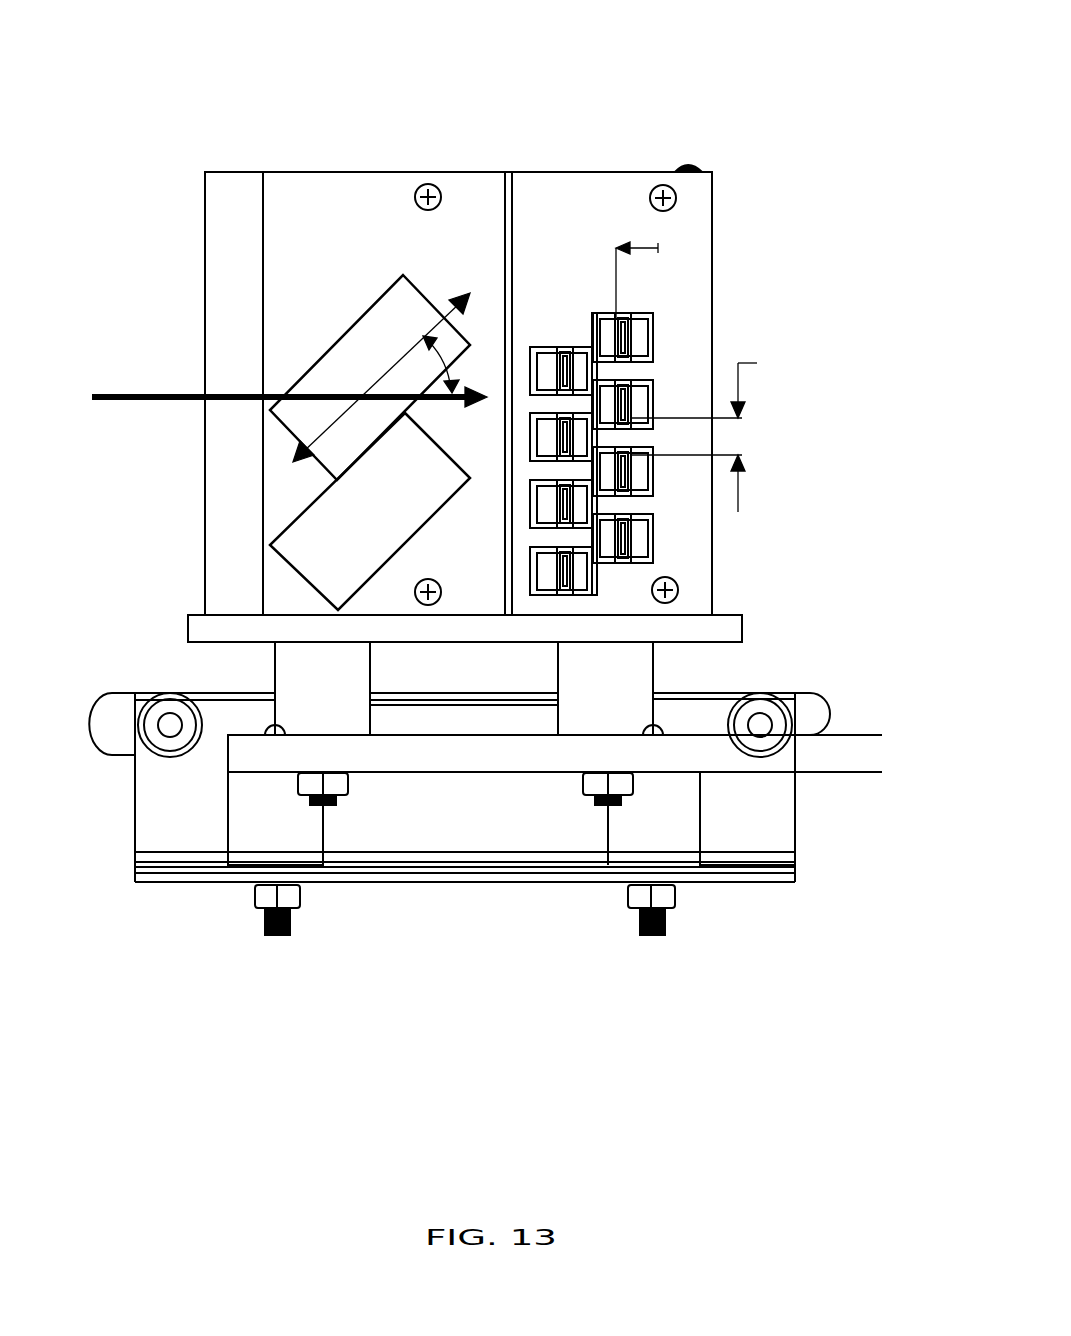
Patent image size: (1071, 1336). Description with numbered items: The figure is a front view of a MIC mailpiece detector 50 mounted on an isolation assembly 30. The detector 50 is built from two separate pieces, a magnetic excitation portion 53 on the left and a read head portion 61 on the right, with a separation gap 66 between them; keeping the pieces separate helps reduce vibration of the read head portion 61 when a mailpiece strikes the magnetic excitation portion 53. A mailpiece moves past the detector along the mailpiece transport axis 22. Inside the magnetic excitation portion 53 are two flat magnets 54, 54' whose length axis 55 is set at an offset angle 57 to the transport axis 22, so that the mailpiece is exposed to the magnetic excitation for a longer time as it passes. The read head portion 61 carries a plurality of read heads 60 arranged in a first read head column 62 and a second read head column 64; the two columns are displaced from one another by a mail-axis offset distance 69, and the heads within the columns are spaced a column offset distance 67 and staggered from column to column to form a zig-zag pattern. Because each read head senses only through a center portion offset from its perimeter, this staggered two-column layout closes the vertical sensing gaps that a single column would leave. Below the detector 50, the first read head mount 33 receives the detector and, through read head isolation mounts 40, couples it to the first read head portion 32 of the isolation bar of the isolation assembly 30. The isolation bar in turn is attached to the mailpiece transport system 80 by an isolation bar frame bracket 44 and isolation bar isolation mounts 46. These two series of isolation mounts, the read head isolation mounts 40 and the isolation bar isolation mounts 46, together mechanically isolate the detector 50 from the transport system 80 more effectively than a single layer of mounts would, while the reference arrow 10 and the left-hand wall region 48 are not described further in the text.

The optical assembly 10 is at (262, 128).
The mailpiece transport axis 22 is at (112, 392).
The isolation assembly 30 is at (278, 694).
The first read head portion 32 is at (455, 750).
The first read head mount 33 is at (693, 620).
The read head isolation mounts 40 is at (633, 688).
The isolation bar frame bracket 44 is at (525, 798).
The isolation bar isolation mounts 46 is at (663, 837).
The left housing wall 48 is at (235, 230).
The MIC mailpiece detector 50 is at (302, 198).
The magnetic excitation portion 53 is at (378, 220).
The flat magnet 54 is at (370, 357).
The flat magnet 54' is at (346, 511).
The length axis 55 is at (445, 322).
The offset angle 57 is at (445, 345).
The read heads 60 is at (650, 418).
The read head portion 61 is at (553, 207).
The first read head column 62 is at (560, 370).
The second read head column 64 is at (627, 323).
The separation gap 66 is at (503, 175).
The column offset distance 67 is at (710, 432).
The mail-axis offset distance 69 is at (646, 268).
The mailpiece transport system 80 is at (570, 858).